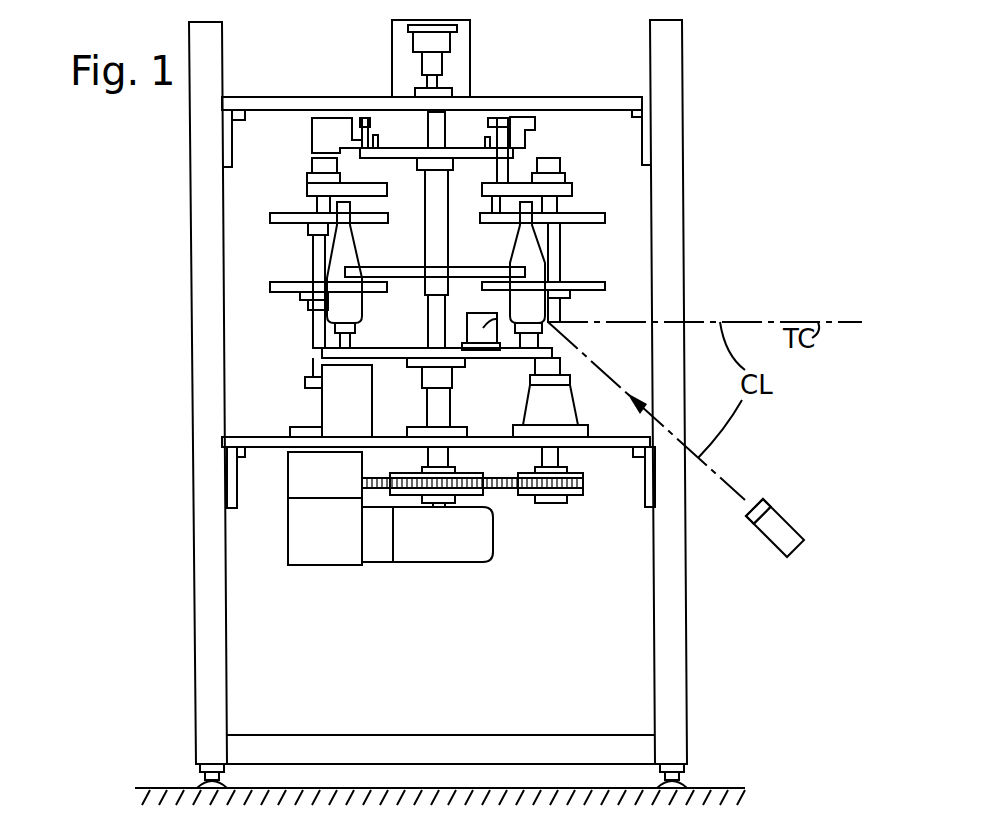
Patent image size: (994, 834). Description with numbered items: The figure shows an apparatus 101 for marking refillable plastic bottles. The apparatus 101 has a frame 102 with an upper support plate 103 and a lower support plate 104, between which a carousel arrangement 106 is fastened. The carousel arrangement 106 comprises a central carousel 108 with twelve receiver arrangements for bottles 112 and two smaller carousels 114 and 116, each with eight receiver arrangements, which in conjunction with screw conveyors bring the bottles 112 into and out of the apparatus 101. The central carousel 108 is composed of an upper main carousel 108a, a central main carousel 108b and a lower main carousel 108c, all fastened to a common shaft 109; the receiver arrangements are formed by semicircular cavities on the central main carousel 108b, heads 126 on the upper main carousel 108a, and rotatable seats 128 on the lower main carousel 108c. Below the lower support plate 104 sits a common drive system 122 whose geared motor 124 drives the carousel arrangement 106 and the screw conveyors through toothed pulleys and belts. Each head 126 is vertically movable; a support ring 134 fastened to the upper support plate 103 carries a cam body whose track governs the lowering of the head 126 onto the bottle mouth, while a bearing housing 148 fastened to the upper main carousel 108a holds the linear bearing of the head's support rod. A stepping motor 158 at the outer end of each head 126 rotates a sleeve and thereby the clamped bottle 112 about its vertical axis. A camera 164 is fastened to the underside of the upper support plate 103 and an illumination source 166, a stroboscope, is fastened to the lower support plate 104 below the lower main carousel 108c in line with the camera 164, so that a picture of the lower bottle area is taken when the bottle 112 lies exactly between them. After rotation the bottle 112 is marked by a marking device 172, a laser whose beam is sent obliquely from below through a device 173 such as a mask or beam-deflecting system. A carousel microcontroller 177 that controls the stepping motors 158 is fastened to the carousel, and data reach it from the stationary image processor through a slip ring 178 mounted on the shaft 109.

The apparatus 101 is at (186, 512).
The frame 102 is at (207, 626).
The upper support plate 103 is at (258, 104).
The lower support plate 104 is at (272, 446).
The carousel arrangement 106 is at (580, 243).
The central carousel 108 is at (410, 125).
The upper main carousel 108a is at (405, 146).
The central main carousel 108b is at (350, 271).
The lower main carousel 108c is at (330, 353).
The common shaft 109 is at (433, 234).
The bottles 112 is at (337, 303).
The smaller carousel 114 is at (290, 218).
The smaller carousel 116 is at (600, 218).
The common drive system 122 is at (530, 510).
The geared motor 124 is at (485, 534).
The head 126 is at (330, 192).
The rotatable seat 128 is at (342, 341).
The support ring 134 is at (525, 128).
The bearing housing 148 is at (500, 163).
The stepping motor 158 is at (318, 165).
The camera 164 is at (325, 138).
The illumination source 166 is at (345, 402).
The marking device 172 is at (790, 531).
The device 173 is at (760, 506).
The carousel microcontroller 177 is at (548, 322).
The slip ring 178 is at (452, 40).